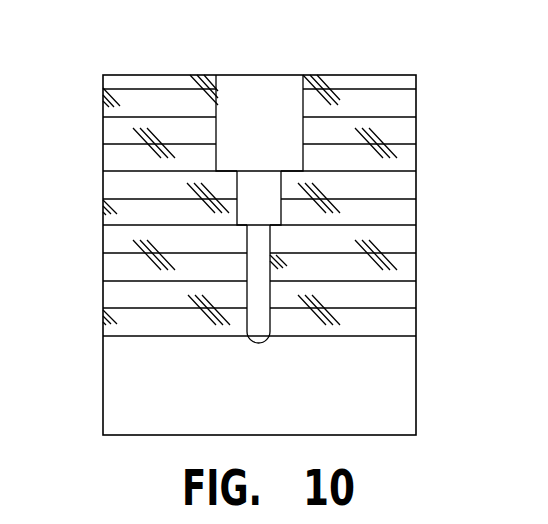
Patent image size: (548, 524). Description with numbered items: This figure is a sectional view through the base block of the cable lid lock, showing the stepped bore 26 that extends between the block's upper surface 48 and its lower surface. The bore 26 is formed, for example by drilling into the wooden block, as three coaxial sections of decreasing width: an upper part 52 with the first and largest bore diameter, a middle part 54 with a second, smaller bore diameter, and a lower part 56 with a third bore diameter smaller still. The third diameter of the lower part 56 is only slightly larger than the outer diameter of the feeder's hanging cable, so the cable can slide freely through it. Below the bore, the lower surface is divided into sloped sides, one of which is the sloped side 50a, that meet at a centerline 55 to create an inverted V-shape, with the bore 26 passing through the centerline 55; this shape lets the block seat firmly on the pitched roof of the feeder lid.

The bore 26 is at (305, 136).
The upper surface 48 is at (350, 75).
The sloped side 50a is at (118, 394).
The upper part 52 is at (222, 75).
The middle part 54 is at (283, 199).
The centerline 55 is at (384, 337).
The lower part 56 is at (247, 292).